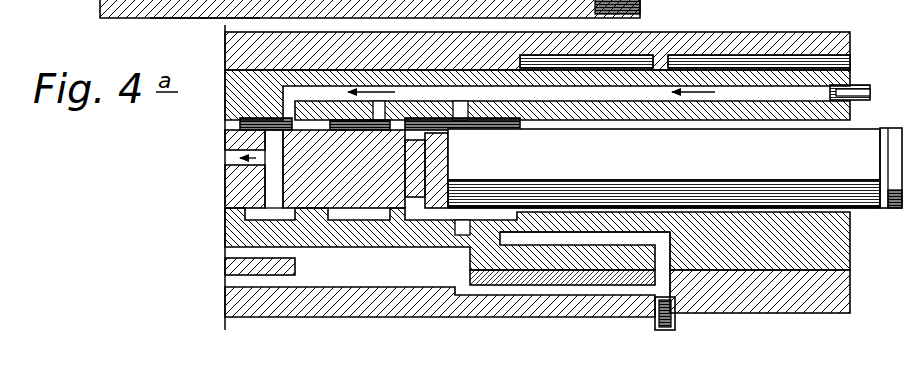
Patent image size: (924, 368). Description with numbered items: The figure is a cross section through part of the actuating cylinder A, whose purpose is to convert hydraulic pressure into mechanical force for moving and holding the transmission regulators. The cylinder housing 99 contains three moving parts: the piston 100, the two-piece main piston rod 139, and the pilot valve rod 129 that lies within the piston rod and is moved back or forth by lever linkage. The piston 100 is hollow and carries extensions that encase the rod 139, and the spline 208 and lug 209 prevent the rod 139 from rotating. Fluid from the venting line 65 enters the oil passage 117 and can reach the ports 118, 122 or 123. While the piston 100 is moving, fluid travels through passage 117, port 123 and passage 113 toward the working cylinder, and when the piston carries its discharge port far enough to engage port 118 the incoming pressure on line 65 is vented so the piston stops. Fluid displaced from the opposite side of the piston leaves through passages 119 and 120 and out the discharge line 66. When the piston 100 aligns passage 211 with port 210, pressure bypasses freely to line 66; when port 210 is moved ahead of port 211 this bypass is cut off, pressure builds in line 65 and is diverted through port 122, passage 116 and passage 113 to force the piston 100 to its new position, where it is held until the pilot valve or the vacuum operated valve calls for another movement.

The actuating cylinder A is at (100, 1).
The cylinder housing 99 is at (191, 9).
The passage 116 is at (273, 140).
The port 123 is at (240, 124).
The passage 113 is at (222, 162).
The main piston rod 139 is at (238, 232).
The passage 119 is at (226, 256).
The passage 120 is at (228, 279).
The port 122 is at (344, 164).
The port 118 is at (481, 122).
The oil passage 117 is at (628, 92).
The pilot valve rod 129 is at (755, 167).
The lug 209 is at (657, 54).
The spline 208 is at (788, 58).
The venting line 65 is at (860, 84).
The piston 100 is at (850, 296).
The port 210 is at (662, 258).
The passage 211 is at (660, 270).
The discharge line 66 is at (675, 312).